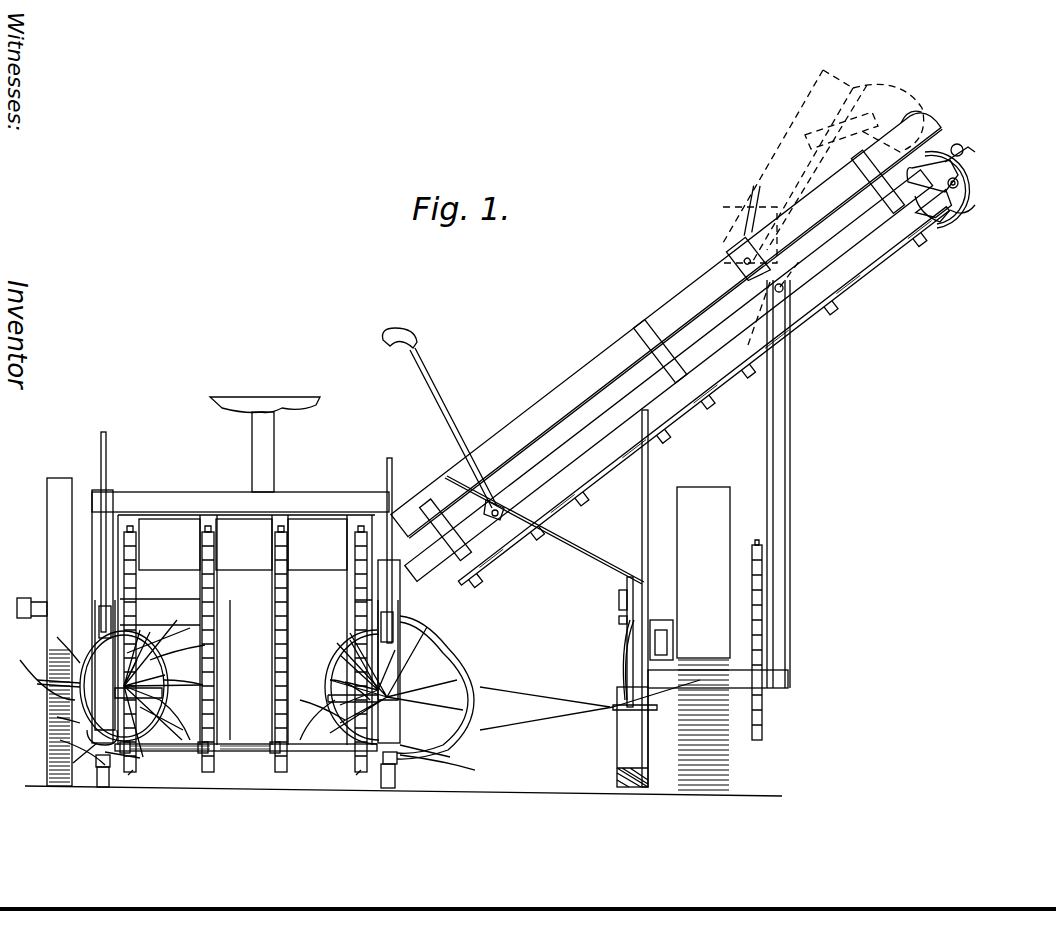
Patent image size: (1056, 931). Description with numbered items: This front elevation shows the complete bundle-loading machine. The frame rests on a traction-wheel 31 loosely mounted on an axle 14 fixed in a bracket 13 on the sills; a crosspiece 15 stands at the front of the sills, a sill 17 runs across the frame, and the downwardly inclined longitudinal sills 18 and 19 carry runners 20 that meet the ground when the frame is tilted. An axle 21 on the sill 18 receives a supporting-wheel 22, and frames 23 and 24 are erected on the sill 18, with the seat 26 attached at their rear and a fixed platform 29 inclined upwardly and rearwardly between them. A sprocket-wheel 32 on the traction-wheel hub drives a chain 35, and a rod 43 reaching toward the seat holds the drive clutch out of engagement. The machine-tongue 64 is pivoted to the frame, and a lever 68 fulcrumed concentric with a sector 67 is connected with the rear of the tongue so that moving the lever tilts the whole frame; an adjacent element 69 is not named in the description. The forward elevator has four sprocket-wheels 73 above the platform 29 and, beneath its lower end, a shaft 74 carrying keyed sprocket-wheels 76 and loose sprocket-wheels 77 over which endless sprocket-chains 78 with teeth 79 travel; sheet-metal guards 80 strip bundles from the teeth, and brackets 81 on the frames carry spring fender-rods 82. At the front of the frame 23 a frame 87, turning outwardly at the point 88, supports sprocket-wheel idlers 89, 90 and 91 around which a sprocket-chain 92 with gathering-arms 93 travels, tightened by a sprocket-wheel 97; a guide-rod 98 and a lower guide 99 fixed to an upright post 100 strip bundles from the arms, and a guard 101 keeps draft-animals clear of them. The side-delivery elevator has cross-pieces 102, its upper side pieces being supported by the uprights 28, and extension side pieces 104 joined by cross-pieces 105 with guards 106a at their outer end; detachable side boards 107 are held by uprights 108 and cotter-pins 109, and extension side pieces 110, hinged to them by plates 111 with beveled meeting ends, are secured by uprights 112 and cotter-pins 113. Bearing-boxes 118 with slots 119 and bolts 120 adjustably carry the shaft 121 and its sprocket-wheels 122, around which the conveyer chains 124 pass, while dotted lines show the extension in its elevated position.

The bracket 13 is at (675, 632).
The axle 14 is at (660, 620).
The crosspiece 15 is at (788, 678).
The sill 17 is at (590, 696).
The longitudinal sill 18 is at (97, 785).
The sill 19 is at (395, 787).
The runners 20 is at (259, 765).
The axle 21 is at (30, 602).
The supporting-wheel 22 is at (47, 514).
The frame 23 is at (400, 580).
The frame 24 is at (100, 490).
The seat 26 is at (258, 397).
The uprights 28 is at (790, 440).
The fixed platform 29 is at (251, 670).
The traction-wheel 31 is at (703, 638).
The sprocket-wheel 32 is at (760, 740).
The chain 35 is at (762, 709).
The rod 43 is at (590, 545).
The machine-tongue 64 is at (617, 740).
The sector 67 is at (627, 582).
The lever 68 is at (619, 603).
The lever 69 is at (625, 640).
The sprocket-wheels 73 is at (131, 526).
The shaft 74 is at (168, 752).
The sprocket-wheels 76 is at (239, 781).
The sprocket-wheels 77 is at (204, 755).
The endless sprocket-chains 78 is at (240, 600).
The teeth 79 is at (240, 625).
The sheet-metal guards 80 is at (243, 544).
The bracket 81 is at (97, 604).
The spring fender-rods 82 is at (102, 450).
The frame 87 is at (340, 738).
The point 88 is at (138, 662).
The sprocket-wheel idler 89 is at (286, 756).
The sprocket-wheel idler 90 is at (158, 690).
The sprocket-wheel idler 91 is at (160, 678).
The sprocket-chain 92 is at (80, 700).
The gathering-arms 93 is at (58, 648).
The sprocket-wheel 97 is at (434, 682).
The guide-rod 98 is at (160, 652).
The guide 99 is at (148, 640).
The upright post 100 is at (259, 755).
The guard 101 is at (466, 668).
The cross-pieces 102 is at (693, 404).
The extension side pieces 104 is at (669, 376).
The cross-pieces 105 is at (940, 222).
The guards 106a is at (978, 208).
The side board 107 is at (667, 321).
The uprights 108 is at (425, 510).
The cotter-pins 109 is at (553, 455).
The extension side pieces 110 is at (866, 190).
The plates 111 is at (741, 244).
The uprights 112 is at (905, 146).
The cotter-pins 113 is at (934, 208).
The bearing-boxes 118 is at (972, 145).
The slots 119 is at (955, 144).
The bolts 120 is at (965, 160).
The shaft 121 is at (960, 183).
The sprocket-wheels 122 is at (985, 195).
The chains 124 is at (717, 414).